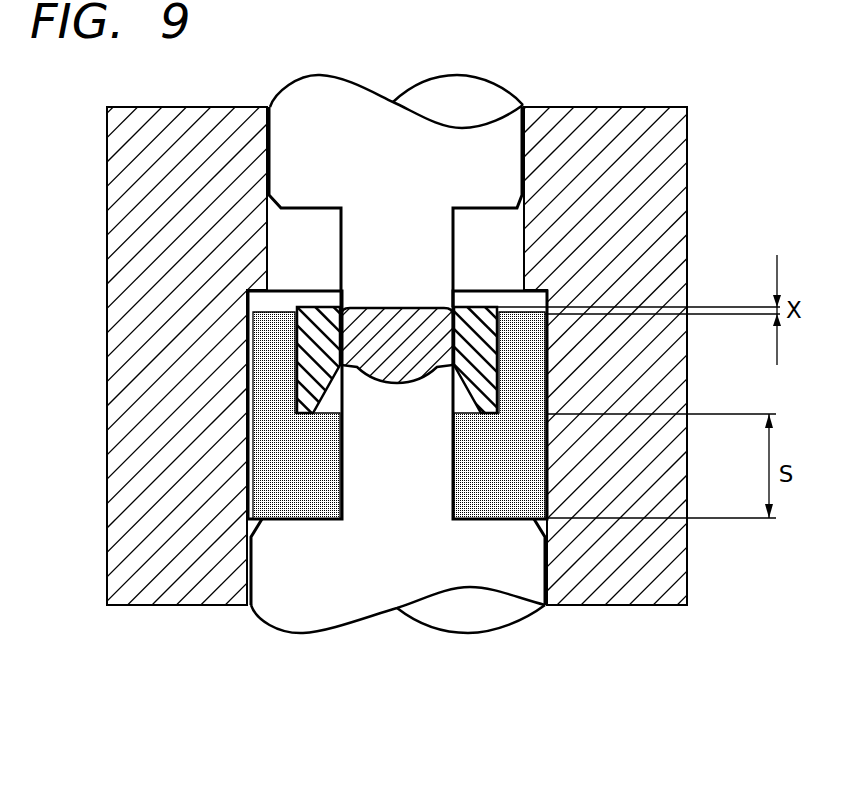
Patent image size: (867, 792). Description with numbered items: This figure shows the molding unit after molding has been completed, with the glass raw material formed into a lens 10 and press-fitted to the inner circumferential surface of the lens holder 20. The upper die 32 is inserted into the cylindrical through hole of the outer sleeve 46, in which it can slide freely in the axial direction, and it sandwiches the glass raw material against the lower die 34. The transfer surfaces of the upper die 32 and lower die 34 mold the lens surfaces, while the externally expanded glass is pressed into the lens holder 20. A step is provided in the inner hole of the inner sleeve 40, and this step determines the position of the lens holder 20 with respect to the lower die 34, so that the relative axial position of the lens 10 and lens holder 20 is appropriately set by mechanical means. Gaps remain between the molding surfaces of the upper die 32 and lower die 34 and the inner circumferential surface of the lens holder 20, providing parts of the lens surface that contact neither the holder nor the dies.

The lens 10 is at (417, 345).
The lens holder 20 is at (497, 308).
The upper die 32 is at (335, 137).
The lower die 34 is at (310, 570).
The inner sleeve 40 is at (505, 483).
The outer sleeve 46 is at (603, 577).